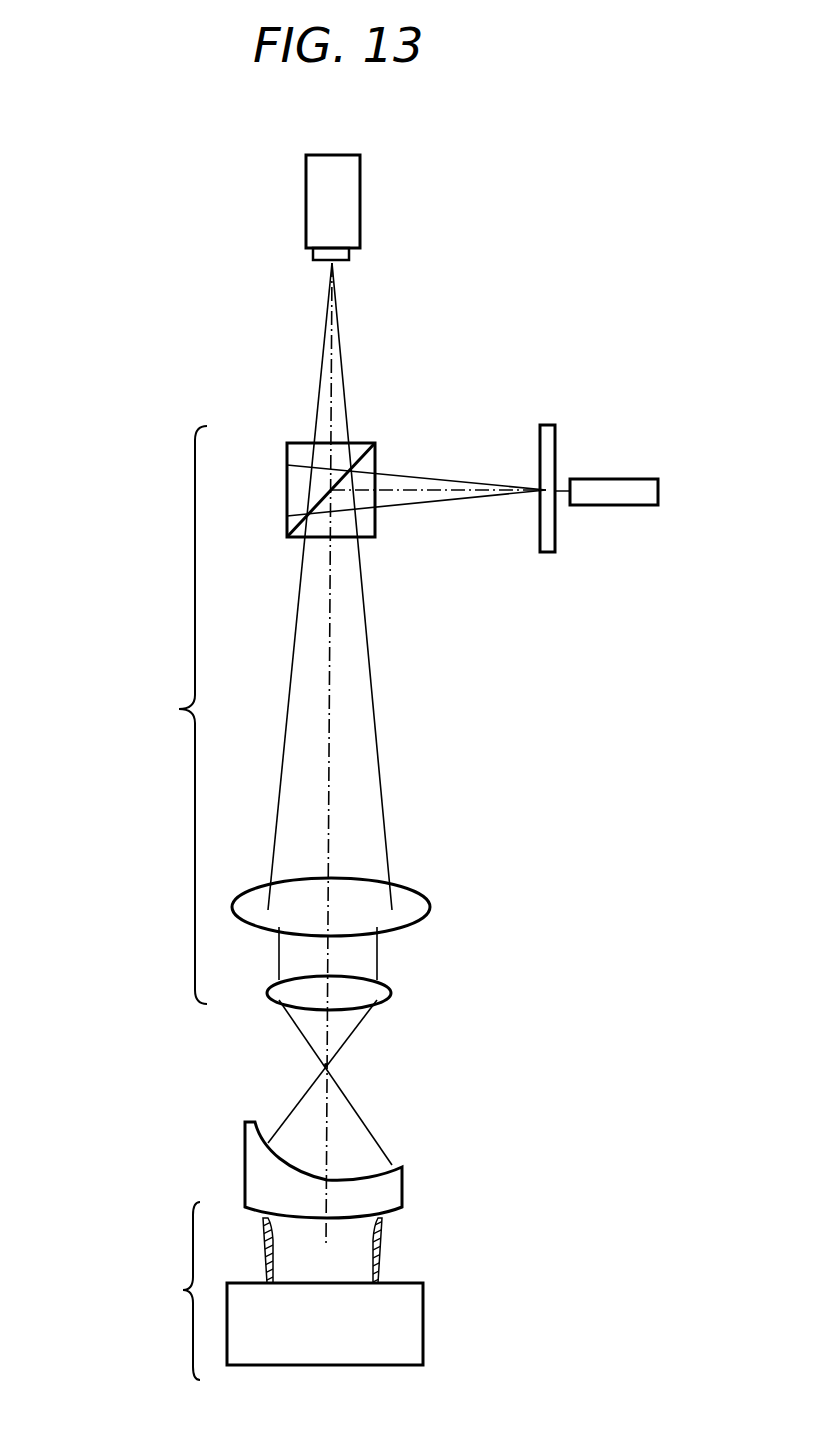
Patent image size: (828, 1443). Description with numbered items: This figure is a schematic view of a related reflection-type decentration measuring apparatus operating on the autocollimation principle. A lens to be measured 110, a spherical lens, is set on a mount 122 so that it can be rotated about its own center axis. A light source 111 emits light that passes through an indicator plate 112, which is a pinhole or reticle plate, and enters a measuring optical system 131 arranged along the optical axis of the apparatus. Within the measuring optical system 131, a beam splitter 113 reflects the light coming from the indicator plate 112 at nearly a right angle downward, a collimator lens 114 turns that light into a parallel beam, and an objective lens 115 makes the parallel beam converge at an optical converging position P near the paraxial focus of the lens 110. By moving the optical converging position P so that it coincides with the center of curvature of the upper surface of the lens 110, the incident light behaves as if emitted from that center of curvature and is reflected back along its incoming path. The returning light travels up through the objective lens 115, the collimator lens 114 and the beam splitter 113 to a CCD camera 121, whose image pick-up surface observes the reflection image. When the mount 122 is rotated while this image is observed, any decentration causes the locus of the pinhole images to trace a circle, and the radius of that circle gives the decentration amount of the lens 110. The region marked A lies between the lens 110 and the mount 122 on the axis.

The CCD camera 121 is at (353, 183).
The beam splitter 113 is at (295, 443).
The light source 111 is at (612, 480).
The indicator plate 112 is at (550, 552).
The measuring optical system 131 is at (154, 715).
The collimator lens 114 is at (408, 898).
The objective lens 115 is at (392, 991).
The optical converging position P is at (333, 1065).
The lens to be measured 110 is at (397, 1185).
The region A is at (330, 1240).
The mount 122 is at (260, 1291).